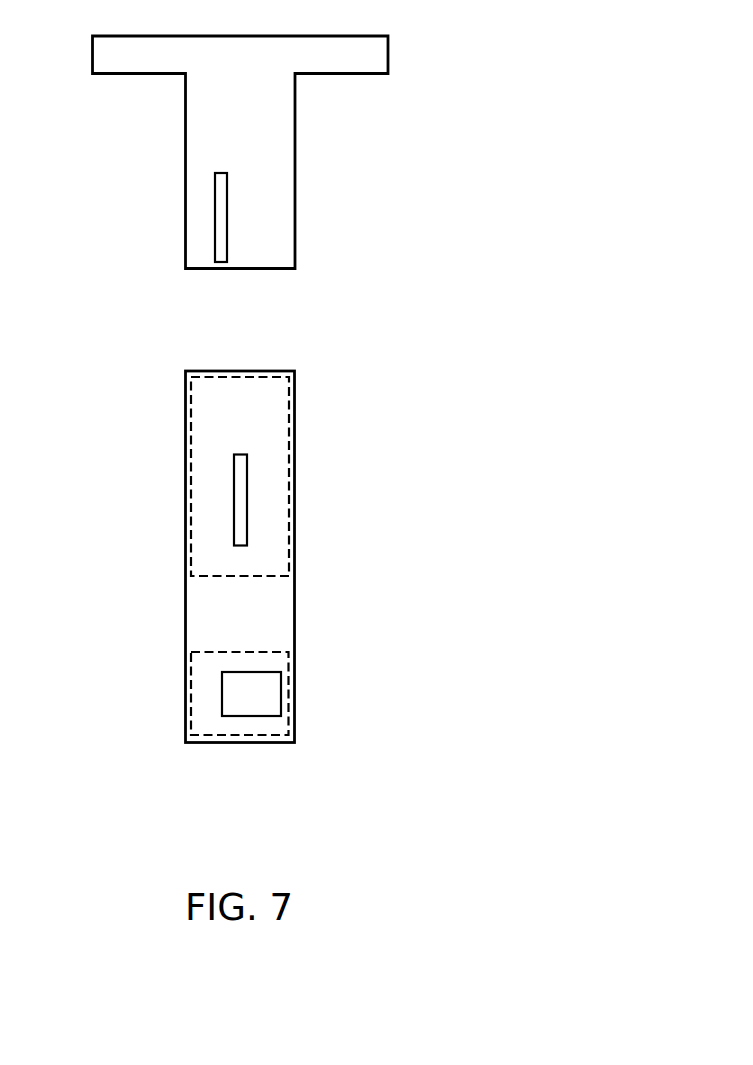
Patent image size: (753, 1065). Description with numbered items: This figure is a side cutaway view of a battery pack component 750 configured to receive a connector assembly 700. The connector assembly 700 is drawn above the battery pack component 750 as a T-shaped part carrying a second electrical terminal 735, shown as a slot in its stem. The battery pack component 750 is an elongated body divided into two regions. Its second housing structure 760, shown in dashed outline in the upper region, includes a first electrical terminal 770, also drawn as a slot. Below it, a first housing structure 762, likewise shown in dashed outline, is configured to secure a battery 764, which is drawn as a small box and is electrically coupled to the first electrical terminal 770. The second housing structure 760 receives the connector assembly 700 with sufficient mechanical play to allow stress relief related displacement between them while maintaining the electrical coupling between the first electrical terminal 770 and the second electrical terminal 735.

The connector assembly 700 is at (320, 169).
The second electrical terminal 735 is at (215, 193).
The battery pack component 750 is at (156, 521).
The second housing structure 760 is at (290, 407).
The first housing structure 762 is at (257, 651).
The battery 764 is at (269, 706).
The first electrical terminal 770 is at (247, 477).